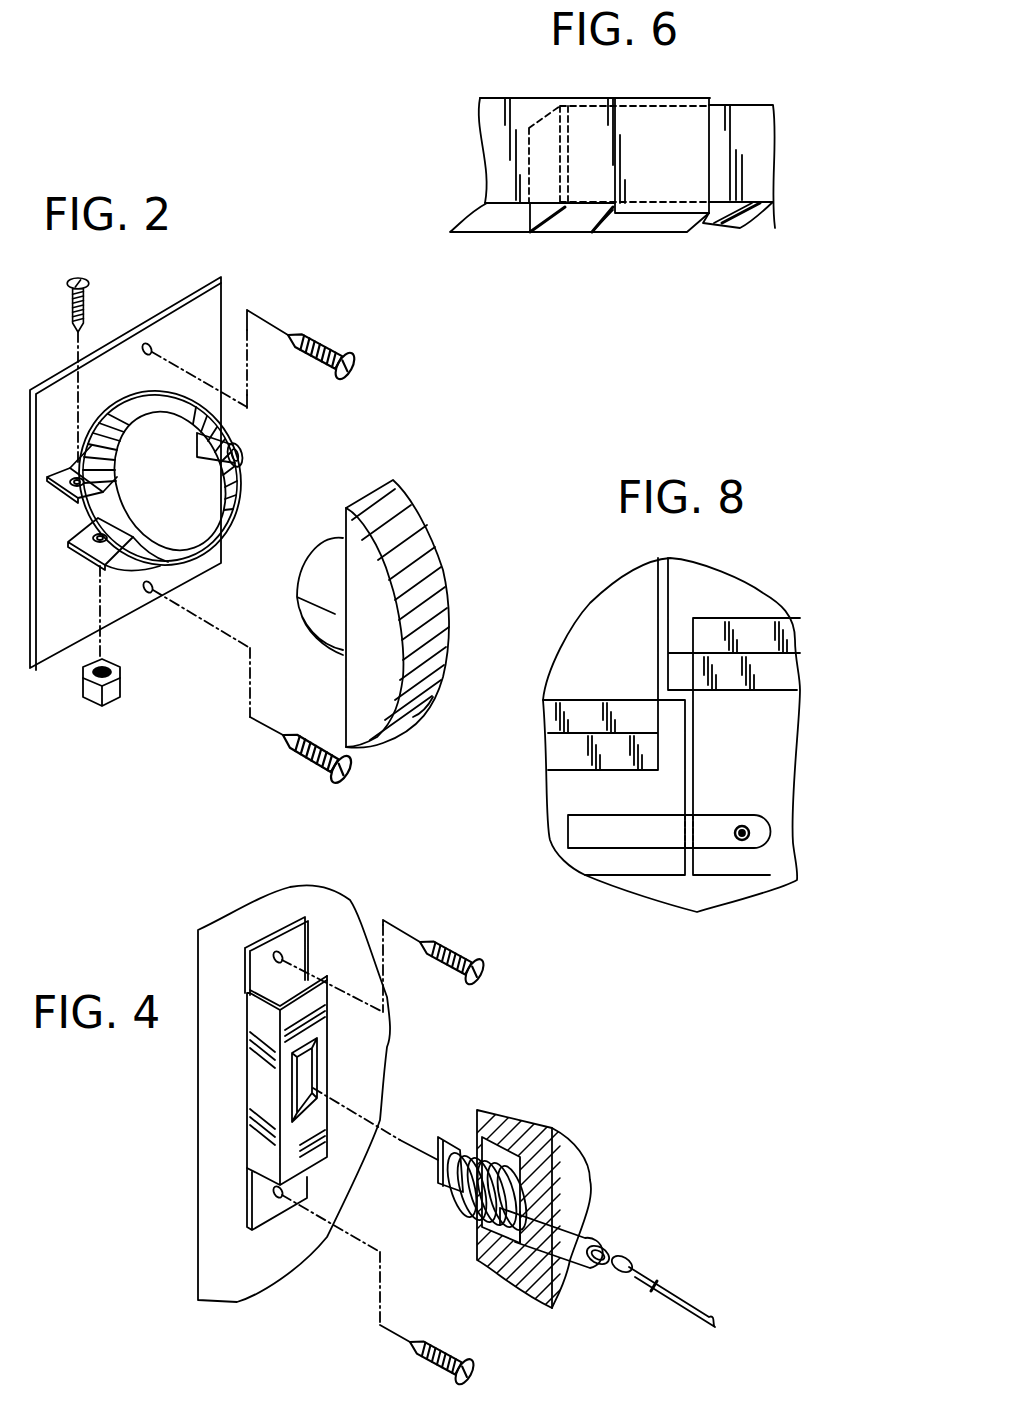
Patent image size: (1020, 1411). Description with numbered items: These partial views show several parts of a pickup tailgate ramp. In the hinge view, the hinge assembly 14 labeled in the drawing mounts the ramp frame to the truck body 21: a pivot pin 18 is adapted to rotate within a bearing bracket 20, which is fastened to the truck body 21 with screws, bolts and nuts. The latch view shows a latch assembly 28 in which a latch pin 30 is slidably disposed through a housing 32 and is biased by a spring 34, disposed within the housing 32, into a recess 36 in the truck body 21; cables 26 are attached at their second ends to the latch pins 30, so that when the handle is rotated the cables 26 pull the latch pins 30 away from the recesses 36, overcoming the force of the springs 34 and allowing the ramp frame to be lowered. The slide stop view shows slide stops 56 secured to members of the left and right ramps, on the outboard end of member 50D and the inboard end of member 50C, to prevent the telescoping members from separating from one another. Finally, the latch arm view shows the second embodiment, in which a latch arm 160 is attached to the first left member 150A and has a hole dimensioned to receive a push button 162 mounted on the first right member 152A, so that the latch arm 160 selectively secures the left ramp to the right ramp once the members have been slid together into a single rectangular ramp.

In FIG. 2, the mounting bracket assembly 14 is at (356, 425).
In FIG. 2, the pivot pin 18 is at (316, 552).
In FIG. 2, the bearing bracket 20 is at (185, 545).
In FIG. 2, the truck body 21 is at (43, 650).
In FIG. 4, the truck body 21 is at (250, 1277).
In FIG. 6, the member 50C is at (763, 137).
In FIG. 6, the member 50D is at (487, 136).
In FIG. 6, the slide stops 56 is at (532, 232).
In FIG. 8, the first left member 150A is at (614, 787).
In FIG. 8, the first right member 152A is at (729, 716).
In FIG. 8, the latch arm 160 is at (653, 832).
In FIG. 8, the push button 162 is at (742, 840).
In FIG. 4, the latch assembly 28 is at (470, 1060).
In FIG. 4, the latch pin 30 is at (572, 1234).
In FIG. 4, the housing 32 is at (530, 1287).
In FIG. 4, the spring 34 is at (462, 1203).
In FIG. 4, the recess 36 is at (300, 1065).
In FIG. 4, the cables 26 is at (677, 1297).